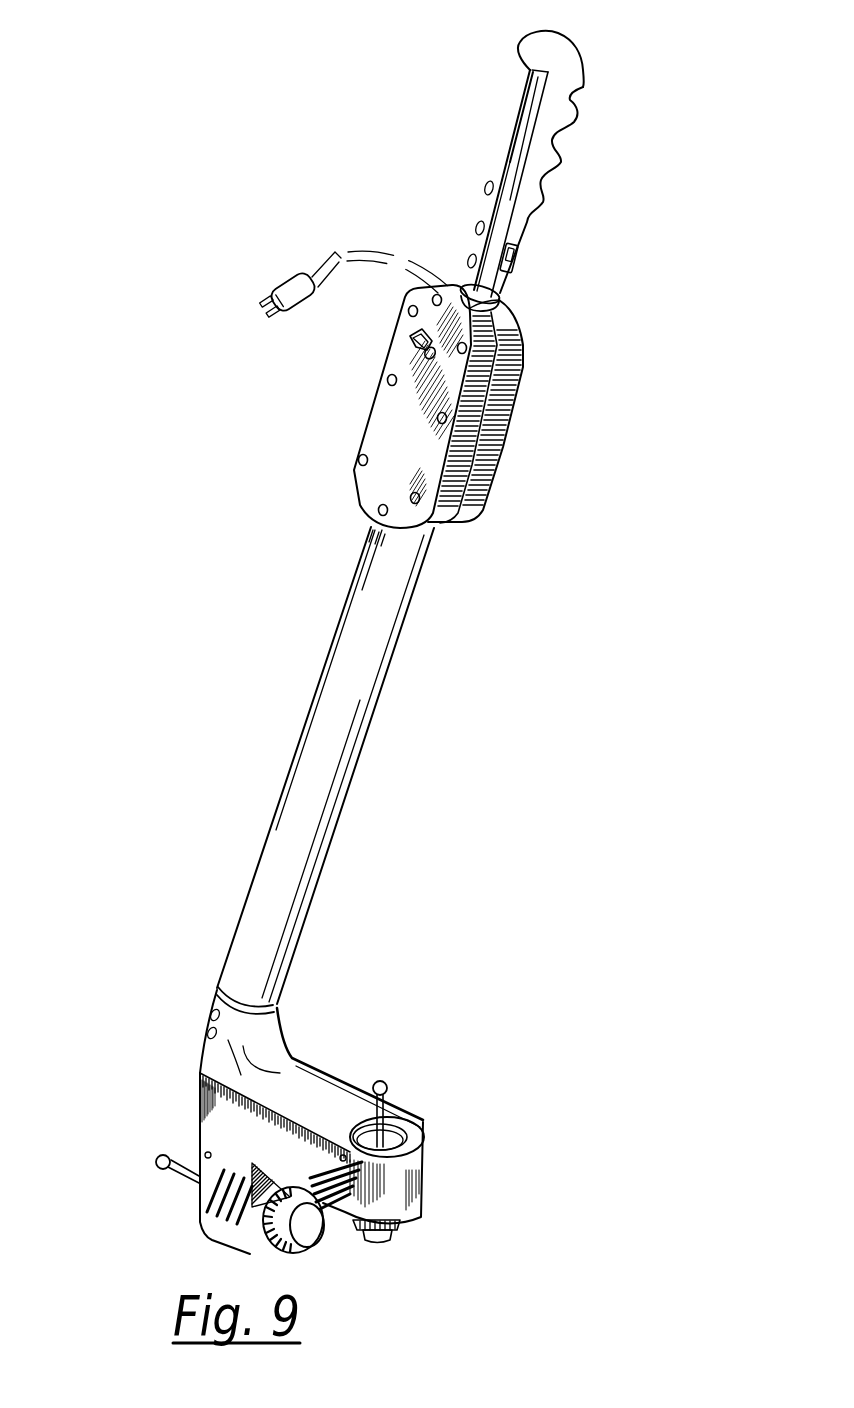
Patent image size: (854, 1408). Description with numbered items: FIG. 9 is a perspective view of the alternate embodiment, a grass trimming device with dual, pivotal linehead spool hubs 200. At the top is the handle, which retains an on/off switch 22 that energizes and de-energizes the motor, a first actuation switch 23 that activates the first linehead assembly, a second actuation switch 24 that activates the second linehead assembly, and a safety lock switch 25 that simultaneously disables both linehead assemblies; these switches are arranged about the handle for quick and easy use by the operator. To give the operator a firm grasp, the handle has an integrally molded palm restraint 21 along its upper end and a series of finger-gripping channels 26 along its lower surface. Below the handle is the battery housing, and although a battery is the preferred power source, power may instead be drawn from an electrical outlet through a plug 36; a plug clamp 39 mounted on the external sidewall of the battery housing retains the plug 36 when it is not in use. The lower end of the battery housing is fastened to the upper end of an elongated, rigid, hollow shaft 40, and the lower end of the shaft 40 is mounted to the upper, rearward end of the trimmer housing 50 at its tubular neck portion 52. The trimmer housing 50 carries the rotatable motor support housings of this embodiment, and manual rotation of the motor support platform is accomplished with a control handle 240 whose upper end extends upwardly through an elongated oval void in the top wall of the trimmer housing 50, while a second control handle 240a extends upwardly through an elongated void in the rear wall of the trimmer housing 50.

The grass trimming device with dual, pivotal linehead spool hubs 200 is at (558, 488).
The palm restraint 21 is at (537, 33).
The on/off switch 22 is at (518, 260).
The first actuation switch 23 is at (488, 183).
The second actuation switch 24 is at (480, 223).
The safety lock switch 25 is at (470, 253).
The finger-gripping channels 26 is at (568, 98).
The plug 36 is at (327, 255).
The plug clamp 39 is at (410, 333).
The shaft 40 is at (330, 658).
The trimmer housing 50 is at (407, 1117).
The tubular neck portion 52 is at (285, 1033).
The control handle 240 is at (380, 1080).
The second control handle 240a is at (157, 1158).